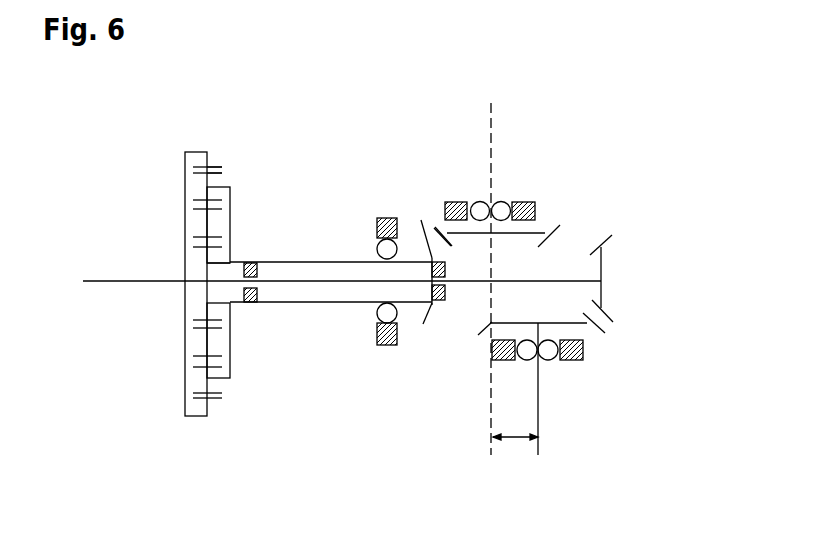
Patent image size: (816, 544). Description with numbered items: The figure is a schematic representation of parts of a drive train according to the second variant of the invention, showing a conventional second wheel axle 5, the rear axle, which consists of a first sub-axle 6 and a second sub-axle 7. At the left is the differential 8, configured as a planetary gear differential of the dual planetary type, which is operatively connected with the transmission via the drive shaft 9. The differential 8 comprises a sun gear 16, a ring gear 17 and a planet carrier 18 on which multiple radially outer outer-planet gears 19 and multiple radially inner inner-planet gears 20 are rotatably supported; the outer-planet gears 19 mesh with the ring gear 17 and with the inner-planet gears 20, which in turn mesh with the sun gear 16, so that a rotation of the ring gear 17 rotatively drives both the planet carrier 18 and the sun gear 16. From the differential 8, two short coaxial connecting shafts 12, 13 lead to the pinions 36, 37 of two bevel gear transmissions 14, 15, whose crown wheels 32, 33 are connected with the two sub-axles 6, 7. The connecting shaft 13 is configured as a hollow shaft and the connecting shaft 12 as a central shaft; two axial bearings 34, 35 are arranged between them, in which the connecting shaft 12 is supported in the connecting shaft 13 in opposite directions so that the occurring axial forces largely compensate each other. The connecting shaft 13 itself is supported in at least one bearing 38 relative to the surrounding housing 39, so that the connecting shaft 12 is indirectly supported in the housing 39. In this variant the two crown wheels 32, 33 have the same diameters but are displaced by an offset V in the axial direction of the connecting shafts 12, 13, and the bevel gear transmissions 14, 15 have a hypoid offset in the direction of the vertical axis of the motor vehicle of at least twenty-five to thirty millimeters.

The second wheel axle 5 is at (622, 178).
The first sub-axle 6 is at (491, 127).
The second sub-axle 7 is at (540, 418).
The differential 8 is at (228, 128).
The drive shaft 9 is at (108, 283).
The connecting shaft 12 is at (347, 280).
The connecting shaft 13 is at (322, 258).
The bevel gear transmission 14 is at (405, 200).
The bevel gear transmission 15 is at (660, 375).
The sun gear 16 is at (213, 258).
The ring gear 17 is at (193, 152).
The planet carrier 18 is at (230, 367).
The outer-planet gears 19 is at (210, 178).
The inner-planet gears 20 is at (213, 226).
The crown wheel 32 is at (544, 215).
The crown wheel 33 is at (593, 337).
The axial bearing 34 is at (275, 305).
The axial bearing 35 is at (455, 297).
The pinion 36 is at (424, 220).
The pinion 37 is at (418, 316).
The bearing 38 is at (377, 313).
The housing 39 is at (387, 346).
The offset V is at (515, 425).